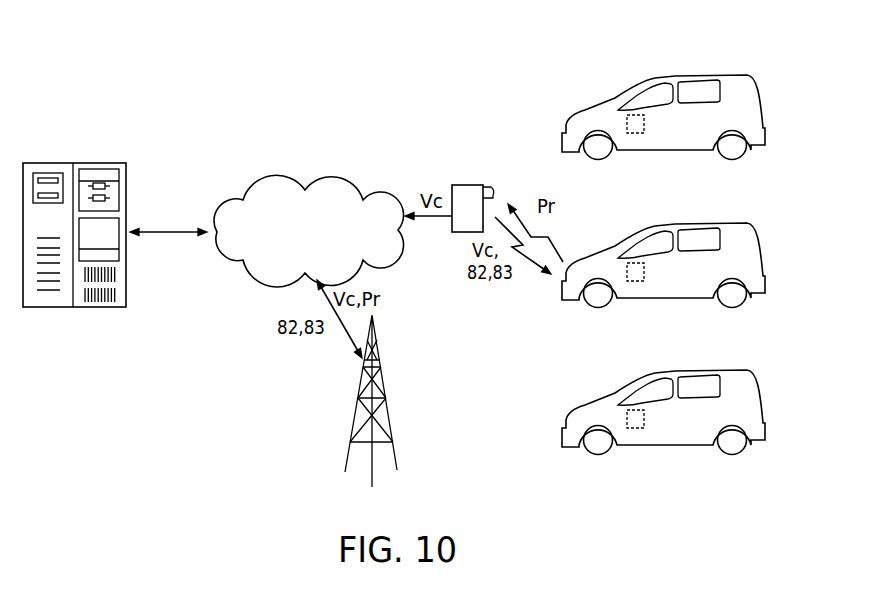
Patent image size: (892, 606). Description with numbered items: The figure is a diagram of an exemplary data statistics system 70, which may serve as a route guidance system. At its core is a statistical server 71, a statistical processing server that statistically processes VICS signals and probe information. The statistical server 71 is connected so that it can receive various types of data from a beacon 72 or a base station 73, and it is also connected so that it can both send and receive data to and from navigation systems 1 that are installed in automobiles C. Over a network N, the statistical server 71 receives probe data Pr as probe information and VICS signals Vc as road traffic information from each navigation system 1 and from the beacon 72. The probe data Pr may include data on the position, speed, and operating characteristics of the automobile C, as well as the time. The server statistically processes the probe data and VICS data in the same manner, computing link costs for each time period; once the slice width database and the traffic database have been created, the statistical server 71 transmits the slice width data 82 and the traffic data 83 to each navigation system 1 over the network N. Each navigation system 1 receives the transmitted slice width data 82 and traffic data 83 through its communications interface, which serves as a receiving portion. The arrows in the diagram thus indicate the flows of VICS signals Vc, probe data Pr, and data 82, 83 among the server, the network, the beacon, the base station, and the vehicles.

The data statistics system 70 is at (220, 77).
The statistical server 71 is at (88, 162).
The beacon 72 is at (466, 185).
The base station 73 is at (352, 412).
The network N is at (313, 185).
The automobile C is at (614, 92).
The navigation system 1 is at (636, 133).
The slice width data 82 is at (168, 230).
The traffic data 83 is at (168, 230).